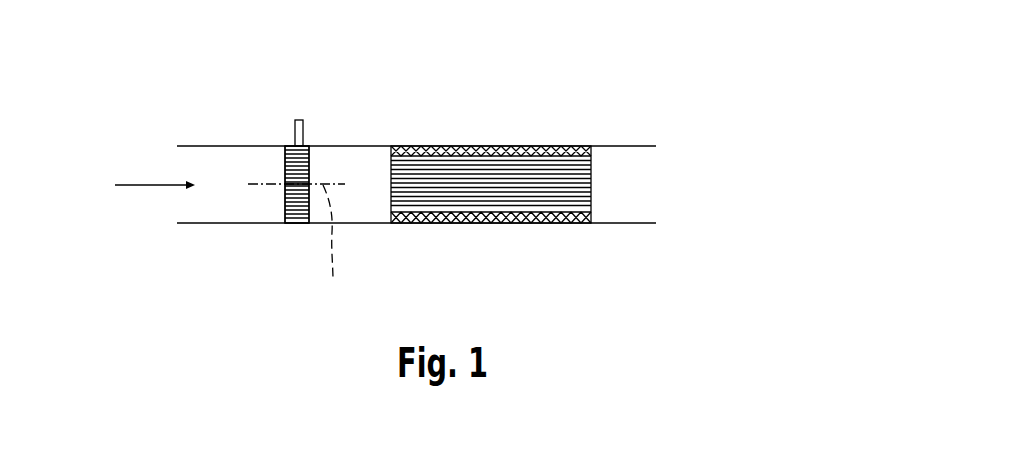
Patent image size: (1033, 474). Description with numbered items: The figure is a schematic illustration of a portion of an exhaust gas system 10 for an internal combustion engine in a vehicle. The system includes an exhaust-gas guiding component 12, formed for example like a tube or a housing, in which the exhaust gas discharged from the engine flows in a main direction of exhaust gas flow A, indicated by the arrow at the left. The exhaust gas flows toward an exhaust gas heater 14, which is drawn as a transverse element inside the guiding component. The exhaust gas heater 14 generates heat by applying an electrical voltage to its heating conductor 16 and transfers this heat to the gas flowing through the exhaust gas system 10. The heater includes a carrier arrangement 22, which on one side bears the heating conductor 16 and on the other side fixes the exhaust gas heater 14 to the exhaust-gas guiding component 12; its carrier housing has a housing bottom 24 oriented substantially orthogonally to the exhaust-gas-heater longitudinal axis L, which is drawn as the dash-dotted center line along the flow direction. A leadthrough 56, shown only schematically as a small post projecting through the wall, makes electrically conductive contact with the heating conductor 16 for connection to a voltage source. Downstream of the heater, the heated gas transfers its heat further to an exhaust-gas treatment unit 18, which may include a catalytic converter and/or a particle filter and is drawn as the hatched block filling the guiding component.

The exhaust gas system 10 is at (642, 111).
The exhaust-gas guiding component 12 is at (190, 146).
The exhaust gas heater 14 is at (310, 170).
The heating conductor 16 is at (298, 205).
The exhaust-gas treatment unit 18 is at (533, 190).
The carrier arrangement 22 is at (285, 146).
The housing bottom 24 is at (285, 195).
The leadthrough 56 is at (318, 112).
The main direction of exhaust gas flow A is at (133, 185).
The exhaust-gas-heater longitudinal axis L is at (336, 244).